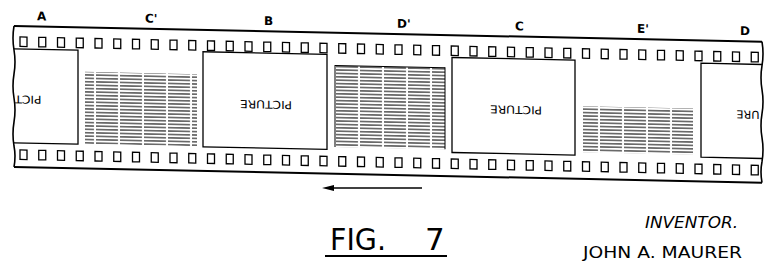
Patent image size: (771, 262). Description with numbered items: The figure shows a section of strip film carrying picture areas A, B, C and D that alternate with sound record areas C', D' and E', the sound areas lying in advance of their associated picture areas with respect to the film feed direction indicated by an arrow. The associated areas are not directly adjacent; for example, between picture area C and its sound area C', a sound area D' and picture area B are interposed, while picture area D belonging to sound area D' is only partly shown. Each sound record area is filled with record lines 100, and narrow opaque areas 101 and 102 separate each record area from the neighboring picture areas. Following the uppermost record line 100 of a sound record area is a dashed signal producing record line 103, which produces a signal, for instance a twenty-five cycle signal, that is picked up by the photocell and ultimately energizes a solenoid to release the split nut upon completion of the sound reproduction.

The record lines 100 is at (418, 78).
The narrow opaque area 101 is at (335, 68).
The narrow opaque area 102 is at (447, 76).
The signal producing record line 103 is at (350, 63).